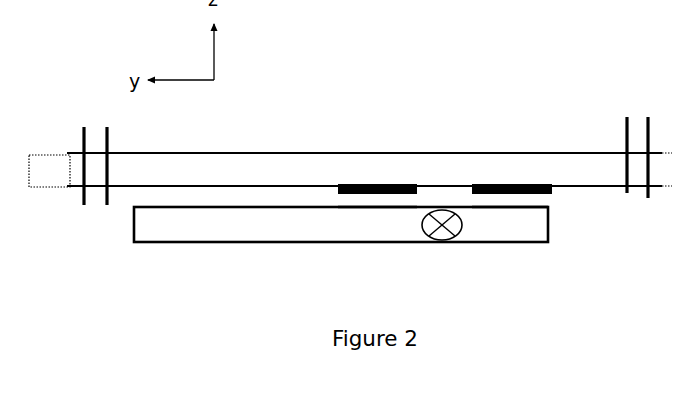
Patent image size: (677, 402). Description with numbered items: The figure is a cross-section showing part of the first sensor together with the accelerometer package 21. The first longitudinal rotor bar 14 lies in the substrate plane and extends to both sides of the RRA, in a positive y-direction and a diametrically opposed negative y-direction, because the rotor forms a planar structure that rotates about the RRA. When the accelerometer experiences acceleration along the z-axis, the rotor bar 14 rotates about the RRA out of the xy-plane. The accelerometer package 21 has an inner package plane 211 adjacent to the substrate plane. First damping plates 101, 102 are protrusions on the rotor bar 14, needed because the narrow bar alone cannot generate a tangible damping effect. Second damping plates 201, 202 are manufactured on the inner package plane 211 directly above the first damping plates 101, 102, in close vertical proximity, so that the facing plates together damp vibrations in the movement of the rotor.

The accelerometer package 21 is at (289, 176).
The inner package plane 211 is at (569, 192).
The second damping plate 201 is at (374, 182).
The second damping plate 202 is at (506, 182).
The first longitudinal rotor bar 14 is at (226, 228).
The first damping plate 101 is at (371, 211).
The first damping plate 102 is at (509, 211).
The rotor rotation axis RRA is at (451, 229).